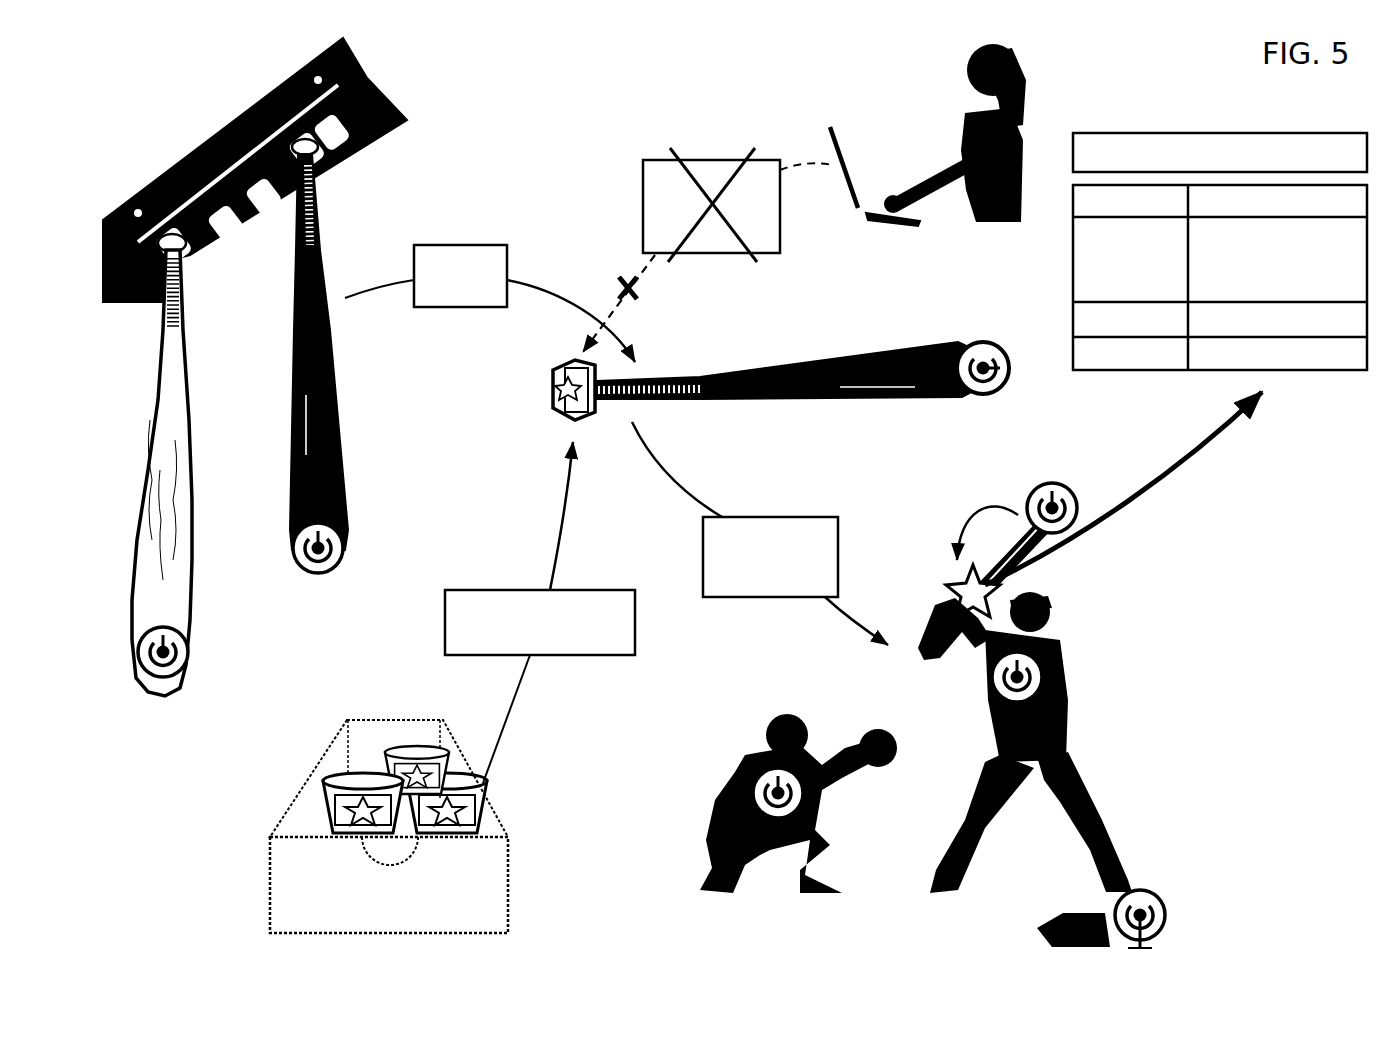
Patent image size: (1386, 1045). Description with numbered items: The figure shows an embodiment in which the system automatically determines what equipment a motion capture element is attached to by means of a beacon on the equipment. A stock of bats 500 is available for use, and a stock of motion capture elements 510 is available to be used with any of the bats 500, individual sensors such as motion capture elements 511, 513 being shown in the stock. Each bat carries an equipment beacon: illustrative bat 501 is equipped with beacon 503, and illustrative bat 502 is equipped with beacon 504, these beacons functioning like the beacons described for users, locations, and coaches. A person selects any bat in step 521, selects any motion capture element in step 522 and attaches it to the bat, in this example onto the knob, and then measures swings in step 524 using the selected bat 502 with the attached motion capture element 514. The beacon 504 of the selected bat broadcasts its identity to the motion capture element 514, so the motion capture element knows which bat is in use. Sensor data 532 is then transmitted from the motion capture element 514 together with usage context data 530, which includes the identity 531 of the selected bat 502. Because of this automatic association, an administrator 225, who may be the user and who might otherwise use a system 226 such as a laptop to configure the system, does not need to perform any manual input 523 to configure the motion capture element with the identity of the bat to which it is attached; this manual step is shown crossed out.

The stock of bats 500 is at (363, 73).
The bat 501 is at (172, 470).
The bat 502 is at (332, 382).
The beacon 503 is at (182, 655).
The beacon 504 is at (343, 552).
The stock of motion capture elements 510 is at (275, 880).
The motion capture sensor 511 is at (325, 795).
The motion capture sensor 513 is at (420, 755).
The motion capture element 514 is at (552, 398).
The select bat step 521 is at (450, 245).
The select and attach motion capture element step 522 is at (590, 590).
The manual input 523 is at (698, 155).
The measure swings step 524 is at (838, 535).
The administrator 225 is at (1020, 118).
The system 226 is at (838, 158).
The usage context data 530 is at (1072, 252).
The identity 531 is at (1342, 355).
The sensor data 532 is at (1210, 132).